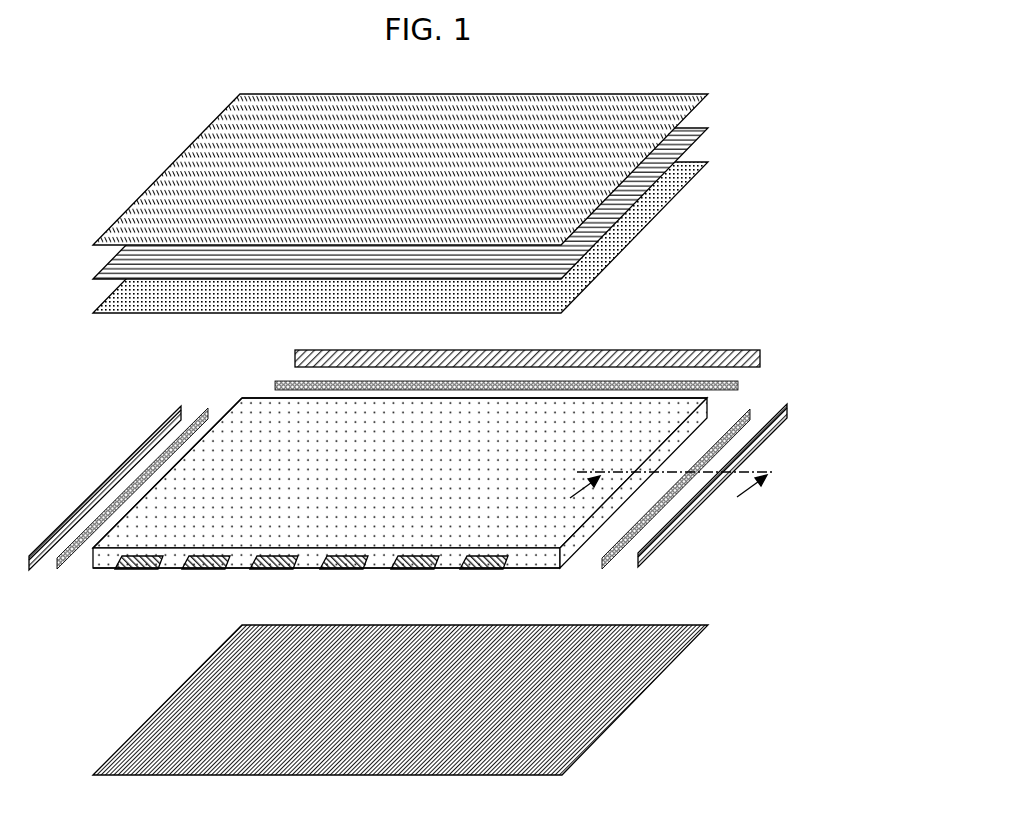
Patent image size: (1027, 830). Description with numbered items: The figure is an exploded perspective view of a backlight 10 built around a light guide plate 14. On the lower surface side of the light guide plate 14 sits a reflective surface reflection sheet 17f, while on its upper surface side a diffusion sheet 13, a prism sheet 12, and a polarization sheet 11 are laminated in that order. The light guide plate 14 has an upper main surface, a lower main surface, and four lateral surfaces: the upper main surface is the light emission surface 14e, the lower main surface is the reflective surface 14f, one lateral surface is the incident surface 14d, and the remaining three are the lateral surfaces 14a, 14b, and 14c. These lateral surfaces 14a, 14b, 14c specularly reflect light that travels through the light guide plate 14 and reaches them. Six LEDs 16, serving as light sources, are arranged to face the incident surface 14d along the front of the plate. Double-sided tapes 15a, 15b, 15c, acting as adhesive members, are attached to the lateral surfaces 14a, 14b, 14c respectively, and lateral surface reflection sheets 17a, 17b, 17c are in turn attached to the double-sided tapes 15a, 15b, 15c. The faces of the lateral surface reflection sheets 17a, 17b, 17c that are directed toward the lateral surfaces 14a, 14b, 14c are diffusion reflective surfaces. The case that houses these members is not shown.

The backlight 10 is at (768, 98).
The polarization sheet 11 is at (708, 94).
The prism sheet 12 is at (708, 128).
The diffusion sheet 13 is at (708, 162).
The light guide plate 14 is at (429, 499).
The lateral surface 14a is at (573, 546).
The lateral surface 14b is at (263, 398).
The lateral surface 14c is at (219, 420).
The incident surface 14d is at (172, 560).
The light emission surface 14e is at (257, 417).
The reflective surface 14f is at (100, 572).
The double-sided tape 15a is at (613, 560).
The double-sided tape 15b is at (276, 388).
The double-sided tape 15c is at (52, 571).
The LED 16 is at (135, 571).
The lateral surface reflection sheet 17a is at (678, 523).
The lateral surface reflection sheet 17b is at (594, 350).
The lateral surface reflection sheet 17c is at (148, 437).
The reflective surface reflection sheet 17f is at (600, 712).